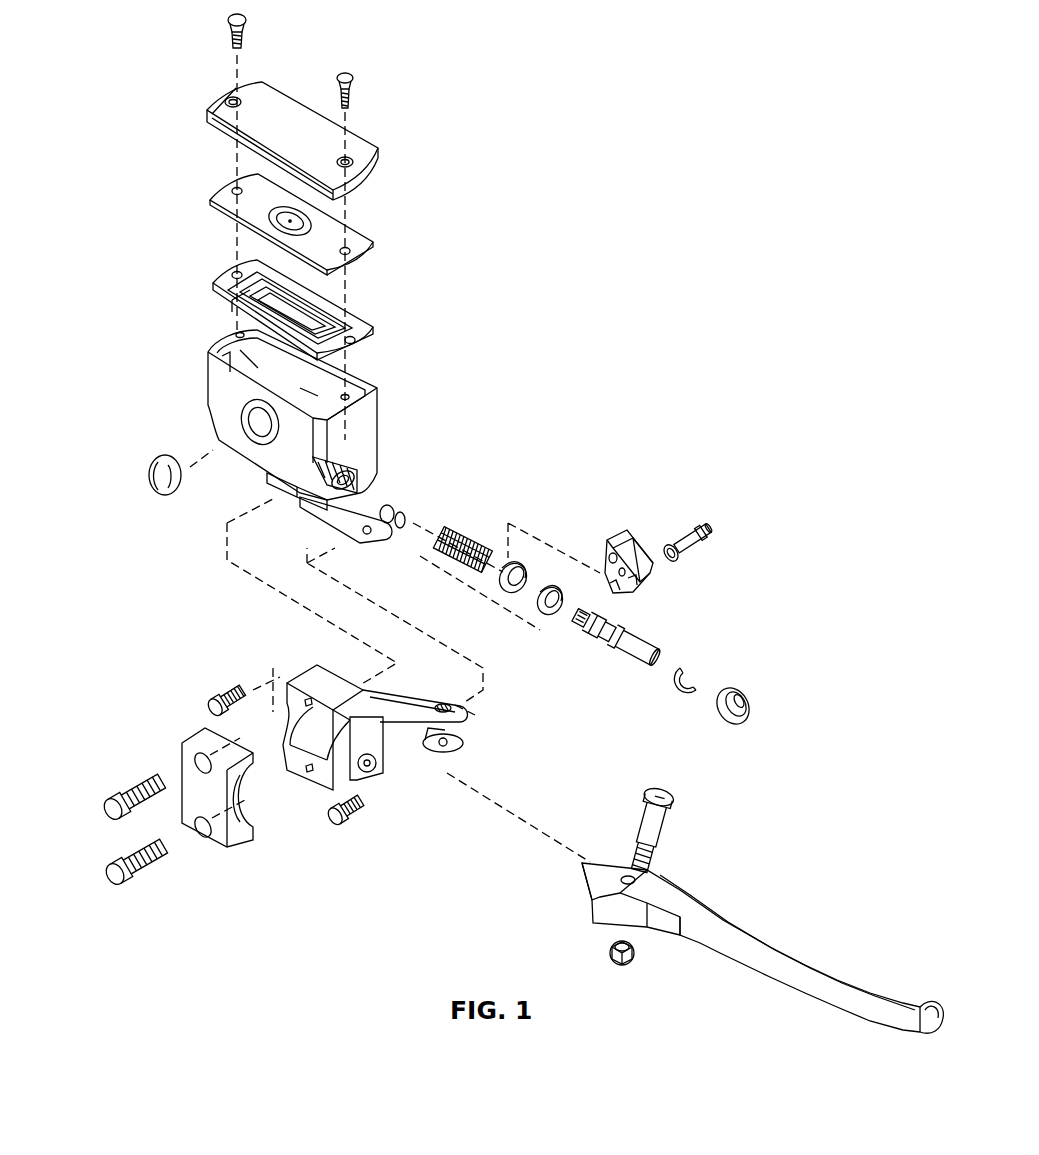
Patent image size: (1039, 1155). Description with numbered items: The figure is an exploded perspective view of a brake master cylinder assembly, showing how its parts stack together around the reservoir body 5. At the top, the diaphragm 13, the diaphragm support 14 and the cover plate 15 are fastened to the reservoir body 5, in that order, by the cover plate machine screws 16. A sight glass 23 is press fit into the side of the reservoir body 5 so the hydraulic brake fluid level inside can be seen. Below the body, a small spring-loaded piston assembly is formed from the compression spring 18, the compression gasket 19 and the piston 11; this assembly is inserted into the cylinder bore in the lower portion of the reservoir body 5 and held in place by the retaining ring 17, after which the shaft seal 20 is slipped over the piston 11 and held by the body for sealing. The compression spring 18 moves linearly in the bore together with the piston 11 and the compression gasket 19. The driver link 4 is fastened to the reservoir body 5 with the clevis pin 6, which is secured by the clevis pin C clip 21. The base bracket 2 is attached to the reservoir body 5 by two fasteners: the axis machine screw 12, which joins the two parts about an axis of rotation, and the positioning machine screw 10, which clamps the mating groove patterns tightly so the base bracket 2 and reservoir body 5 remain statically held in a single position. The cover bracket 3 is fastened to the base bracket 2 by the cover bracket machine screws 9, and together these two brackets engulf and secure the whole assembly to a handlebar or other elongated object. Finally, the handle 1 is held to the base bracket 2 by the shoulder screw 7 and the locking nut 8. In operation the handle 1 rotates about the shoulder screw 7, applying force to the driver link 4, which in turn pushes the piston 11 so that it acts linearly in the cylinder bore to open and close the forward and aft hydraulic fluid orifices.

The handle 1 is at (756, 967).
The base bracket 2 is at (303, 661).
The cover bracket 3 is at (241, 850).
The driver link 4 is at (621, 530).
The reservoir body 5 is at (199, 388).
The clevis pin 6 is at (720, 525).
The shoulder screw 7 is at (670, 828).
The locking nut 8 is at (607, 953).
The cover bracket machine screw 9 is at (107, 866).
The positioning machine screw 10 is at (207, 698).
The piston 11 is at (650, 638).
The axis machine screw 12 is at (342, 816).
The diaphragm 13 is at (202, 285).
The diaphragm support 14 is at (202, 200).
The cover plate 15 is at (197, 105).
The cover plate machine screw 16 is at (248, 22).
The retaining ring 17 is at (710, 668).
The compression spring 18 is at (464, 528).
The compression gasket 19 is at (518, 592).
The shaft seal 20 is at (740, 722).
The clevis pin C clip 21 is at (680, 533).
The sight glass 23 is at (142, 472).